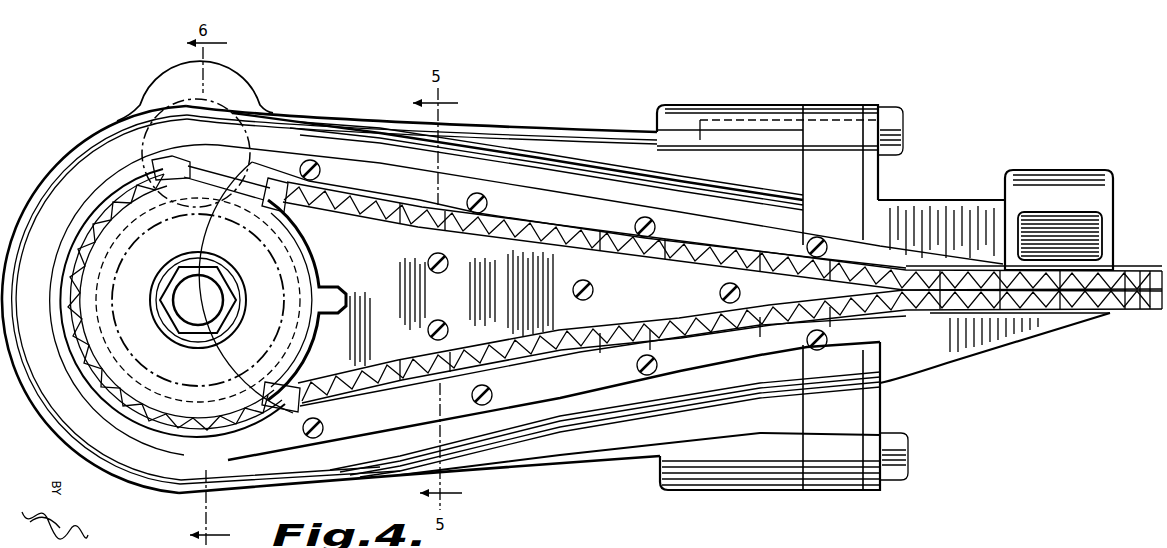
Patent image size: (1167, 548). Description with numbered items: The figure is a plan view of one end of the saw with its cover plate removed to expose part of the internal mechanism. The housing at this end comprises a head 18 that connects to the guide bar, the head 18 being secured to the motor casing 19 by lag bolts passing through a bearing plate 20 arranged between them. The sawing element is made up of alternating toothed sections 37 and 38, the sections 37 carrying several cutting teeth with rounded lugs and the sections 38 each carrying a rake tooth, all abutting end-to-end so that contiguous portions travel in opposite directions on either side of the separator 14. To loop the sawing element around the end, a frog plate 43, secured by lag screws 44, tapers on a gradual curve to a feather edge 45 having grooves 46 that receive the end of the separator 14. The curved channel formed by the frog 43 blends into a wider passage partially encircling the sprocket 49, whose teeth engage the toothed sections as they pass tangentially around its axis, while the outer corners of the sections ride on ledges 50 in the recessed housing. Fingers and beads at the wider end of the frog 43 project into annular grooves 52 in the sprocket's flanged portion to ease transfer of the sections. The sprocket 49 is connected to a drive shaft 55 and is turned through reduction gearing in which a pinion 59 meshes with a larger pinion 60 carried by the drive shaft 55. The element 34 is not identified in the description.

The separator 14 is at (1087, 294).
The head 18 is at (963, 347).
The motor casing 19 is at (568, 425).
The bearing plate 20 is at (841, 490).
The block 34 is at (1077, 237).
The toothed sections 37 is at (768, 311).
The toothed sections 38 is at (662, 262).
The frog plates 43 is at (610, 255).
The lag screws 44 is at (594, 291).
The feather edge 45 is at (897, 290).
The grooves or indentures 46 is at (918, 290).
The sprockets 49 is at (302, 263).
The ledges 50 is at (125, 427).
The annular grooves 52 is at (298, 337).
The drive shaft 55 is at (205, 298).
The pinion 59 is at (213, 100).
The larger pinion 60 is at (163, 378).